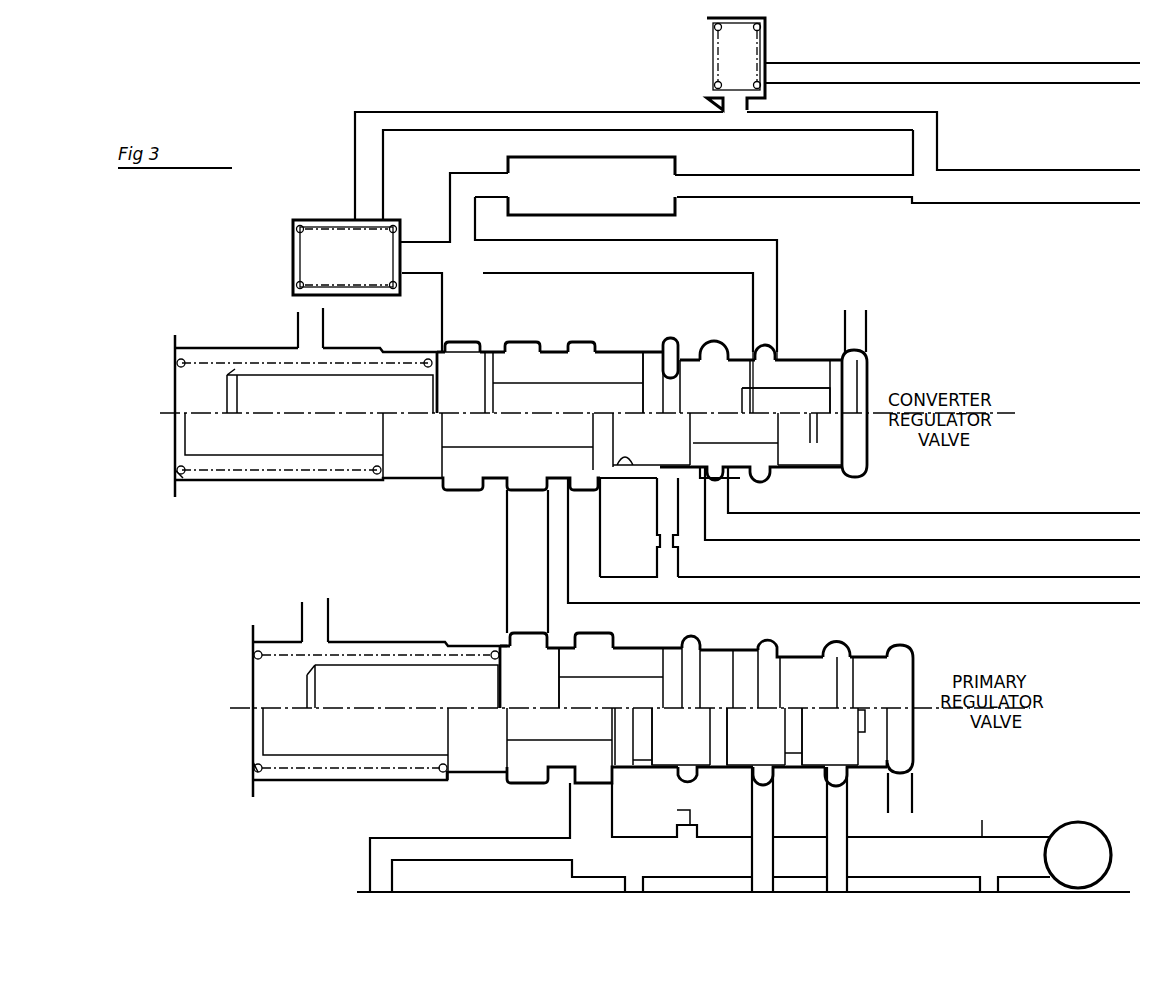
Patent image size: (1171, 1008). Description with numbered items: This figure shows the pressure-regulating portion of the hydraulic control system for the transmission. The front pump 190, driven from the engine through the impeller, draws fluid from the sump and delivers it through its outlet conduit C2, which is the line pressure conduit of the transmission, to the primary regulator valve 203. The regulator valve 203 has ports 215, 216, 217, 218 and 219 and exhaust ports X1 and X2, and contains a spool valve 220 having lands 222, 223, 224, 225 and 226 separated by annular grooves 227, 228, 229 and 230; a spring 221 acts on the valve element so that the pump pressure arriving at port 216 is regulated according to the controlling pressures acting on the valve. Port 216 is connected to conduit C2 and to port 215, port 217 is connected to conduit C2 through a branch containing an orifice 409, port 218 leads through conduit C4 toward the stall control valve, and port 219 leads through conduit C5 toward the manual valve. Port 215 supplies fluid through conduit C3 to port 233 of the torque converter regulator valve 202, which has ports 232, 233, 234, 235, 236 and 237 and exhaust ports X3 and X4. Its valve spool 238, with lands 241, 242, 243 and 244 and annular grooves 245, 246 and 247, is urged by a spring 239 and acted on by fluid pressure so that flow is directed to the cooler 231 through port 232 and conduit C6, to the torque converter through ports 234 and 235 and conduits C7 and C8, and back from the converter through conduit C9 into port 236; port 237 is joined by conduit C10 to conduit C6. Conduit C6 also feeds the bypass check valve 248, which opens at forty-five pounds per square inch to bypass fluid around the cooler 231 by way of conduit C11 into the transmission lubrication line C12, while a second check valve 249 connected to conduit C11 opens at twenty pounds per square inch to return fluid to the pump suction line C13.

The front pump 190 is at (1080, 822).
The torque converter regulator valve 202 is at (575, 345).
The regulator valve 203 is at (372, 642).
The port 215 is at (512, 634).
The port 216 is at (575, 785).
The port 217 is at (683, 780).
The port 218 is at (760, 780).
The port 219 is at (835, 777).
The spool valve 220 is at (400, 670).
The spring 221 is at (258, 777).
The land 222 is at (540, 691).
The land 223 is at (670, 660).
The land 224 is at (730, 668).
The land 225 is at (805, 665).
The land 226 is at (878, 665).
The annular groove 227 is at (620, 665).
The annular groove 228 is at (690, 708).
The annular groove 229 is at (770, 708).
The annular groove 230 is at (846, 708).
The cooler 231 is at (686, 165).
The port 232 is at (443, 348).
The port 233 is at (508, 492).
The port 234 is at (600, 480).
The port 235 is at (665, 485).
The port 236 is at (720, 478).
The port 237 is at (765, 355).
The valve spool 238 is at (178, 432).
The spring 239 is at (183, 481).
The land 241 is at (490, 357).
The land 242 is at (656, 355).
The land 243 is at (695, 368).
The land 244 is at (860, 370).
The annular groove 245 is at (543, 370).
The annular groove 246 is at (672, 376).
The annular groove 247 is at (800, 378).
The bypass check valve 248 is at (293, 250).
The check valve 249 is at (707, 50).
The orifice 409 is at (677, 818).
The outlet conduit C2 is at (982, 837).
The conduit C3 is at (508, 560).
The conduit C4 is at (762, 824).
The conduit C5 is at (835, 823).
The conduit C6 is at (443, 310).
The conduit C7 is at (598, 560).
The conduit C8 is at (680, 562).
The conduit C9 is at (938, 513).
The conduit C10 is at (778, 287).
The conduit C11 is at (540, 110).
The transmission lubrication line C12 is at (995, 170).
The pump suction line C13 is at (868, 68).
The exhaust port X1 is at (304, 606).
The exhaust port X2 is at (913, 790).
The exhaust port X3 is at (300, 327).
The exhaust port X4 is at (866, 318).